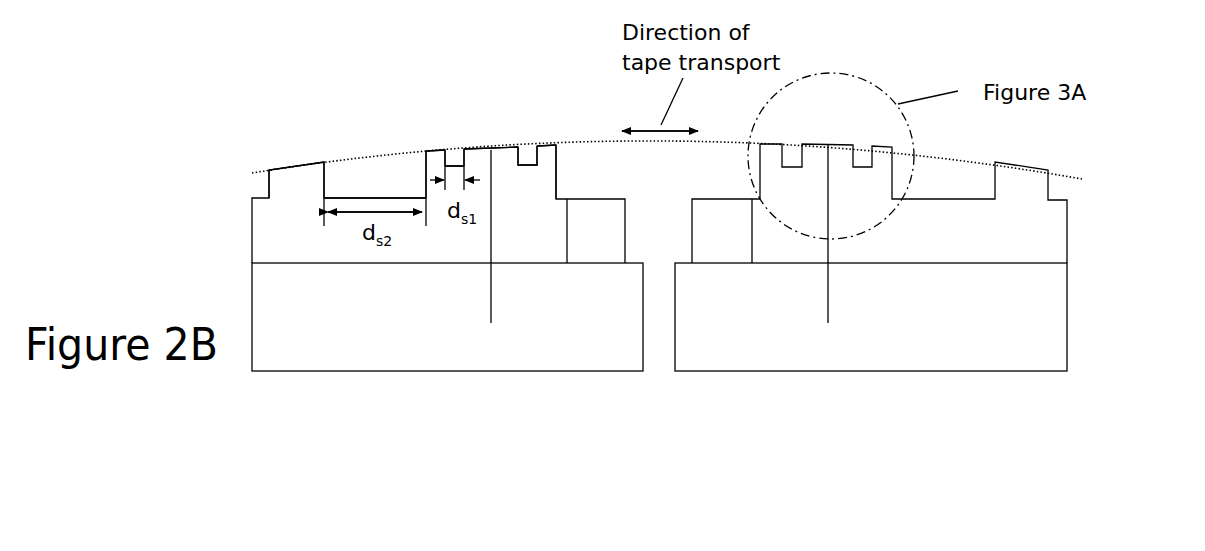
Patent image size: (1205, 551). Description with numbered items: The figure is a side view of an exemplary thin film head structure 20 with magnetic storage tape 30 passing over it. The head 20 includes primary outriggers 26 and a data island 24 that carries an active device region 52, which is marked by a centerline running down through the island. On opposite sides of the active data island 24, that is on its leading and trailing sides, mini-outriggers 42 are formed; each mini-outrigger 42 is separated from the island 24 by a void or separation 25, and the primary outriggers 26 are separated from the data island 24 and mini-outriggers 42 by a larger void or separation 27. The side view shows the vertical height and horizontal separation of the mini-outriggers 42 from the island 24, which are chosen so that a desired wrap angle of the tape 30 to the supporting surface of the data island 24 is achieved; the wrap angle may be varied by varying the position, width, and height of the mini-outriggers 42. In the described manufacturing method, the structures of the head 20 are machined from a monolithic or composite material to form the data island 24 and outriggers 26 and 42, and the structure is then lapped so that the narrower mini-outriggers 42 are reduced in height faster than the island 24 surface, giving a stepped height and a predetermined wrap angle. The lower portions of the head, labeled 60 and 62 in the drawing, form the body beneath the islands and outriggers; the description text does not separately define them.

The thin film head structure 20 is at (662, 197).
The data island 24 is at (471, 153).
The separation 25 is at (447, 136).
The primary outrigger 26 is at (296, 170).
The separation 27 is at (359, 140).
The magnetic storage tape 30 is at (250, 172).
The mini-outrigger 42 is at (427, 153).
The active device region 52 is at (492, 152).
The head body 60 is at (1048, 234).
The base 62 is at (1050, 303).